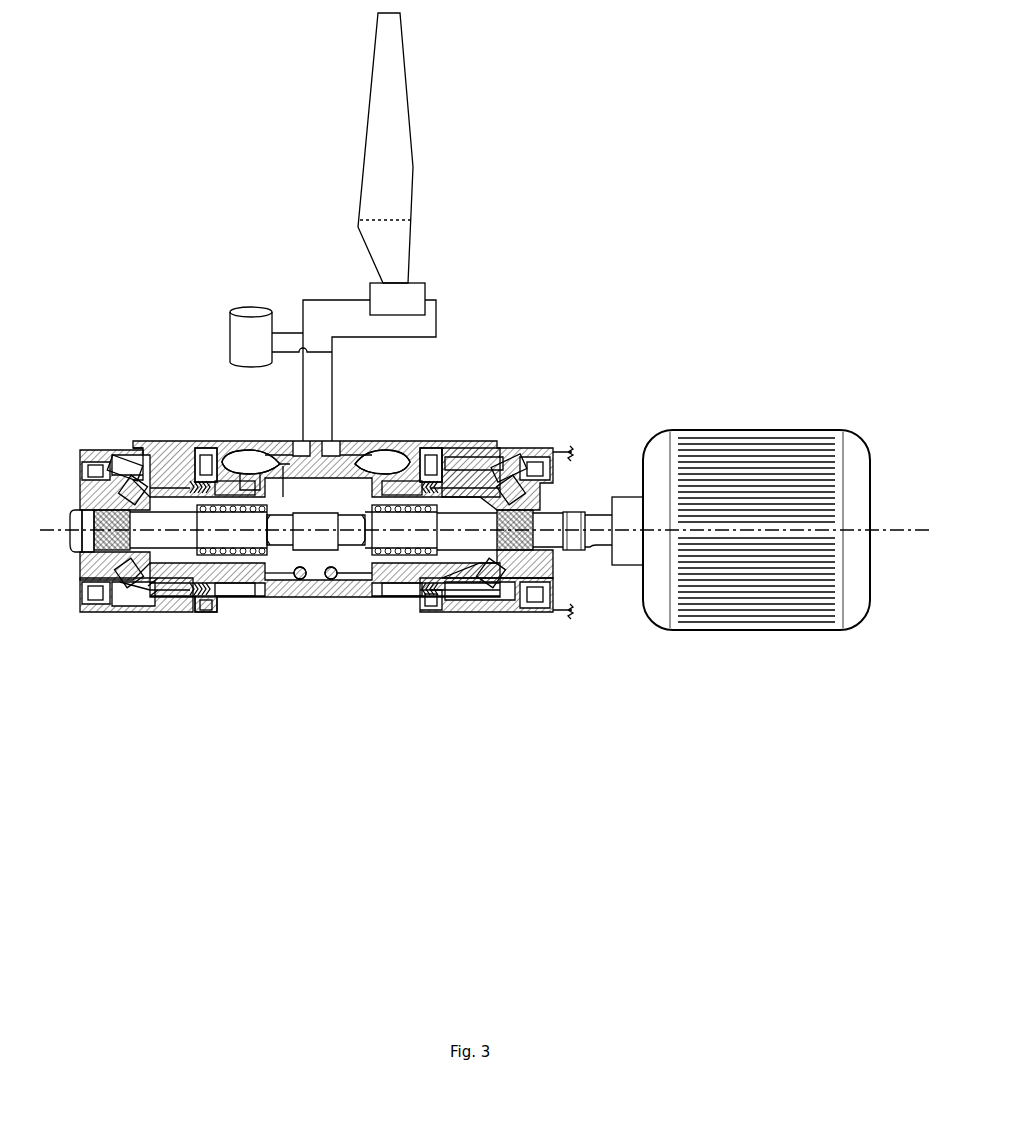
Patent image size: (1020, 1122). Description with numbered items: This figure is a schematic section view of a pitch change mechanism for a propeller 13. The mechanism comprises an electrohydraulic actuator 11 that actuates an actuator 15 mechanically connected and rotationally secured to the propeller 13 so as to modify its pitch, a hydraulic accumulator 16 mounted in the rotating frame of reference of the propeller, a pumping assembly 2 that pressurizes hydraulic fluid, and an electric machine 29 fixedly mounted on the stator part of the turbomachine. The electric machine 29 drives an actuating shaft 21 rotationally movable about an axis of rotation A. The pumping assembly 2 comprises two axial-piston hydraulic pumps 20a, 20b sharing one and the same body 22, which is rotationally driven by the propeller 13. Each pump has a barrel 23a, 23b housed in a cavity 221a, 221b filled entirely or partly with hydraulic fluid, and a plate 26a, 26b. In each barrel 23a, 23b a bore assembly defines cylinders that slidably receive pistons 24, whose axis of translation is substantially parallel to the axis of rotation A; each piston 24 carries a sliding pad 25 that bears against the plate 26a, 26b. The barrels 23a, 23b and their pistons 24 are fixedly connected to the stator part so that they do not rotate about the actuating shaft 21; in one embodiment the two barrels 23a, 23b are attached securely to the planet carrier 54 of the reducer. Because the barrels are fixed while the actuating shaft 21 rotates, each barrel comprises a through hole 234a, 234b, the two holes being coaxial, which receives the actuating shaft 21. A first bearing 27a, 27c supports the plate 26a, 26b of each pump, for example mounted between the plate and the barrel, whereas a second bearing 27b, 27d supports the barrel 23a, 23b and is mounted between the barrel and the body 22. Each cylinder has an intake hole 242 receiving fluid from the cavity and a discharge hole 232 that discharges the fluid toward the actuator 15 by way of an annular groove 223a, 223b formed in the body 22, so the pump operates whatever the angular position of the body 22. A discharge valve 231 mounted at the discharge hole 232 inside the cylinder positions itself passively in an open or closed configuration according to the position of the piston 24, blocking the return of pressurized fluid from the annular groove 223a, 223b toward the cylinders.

The pumping assembly 2 is at (116, 436).
The electrohydraulic actuator 11 is at (471, 326).
The propeller 13 is at (376, 149).
The actuator 15 is at (414, 300).
The hydraulic accumulator 16 is at (270, 339).
The first pump 20a is at (146, 628).
The second pump 20b is at (508, 632).
The actuating shaft 21 is at (598, 507).
The body 22 is at (347, 439).
The cavity 221a is at (226, 460).
The cavity 221b is at (390, 465).
The annular groove 223a is at (287, 582).
The annular groove 223b is at (346, 582).
The barrel 23a is at (250, 600).
The barrel 23b is at (373, 600).
The discharge valve 231 is at (250, 472).
The discharge hole 232 is at (286, 476).
The through hole 234a is at (74, 546).
The through hole 234b is at (563, 551).
The piston 24 is at (238, 604).
The intake hole 242 is at (159, 596).
The sliding pad 25 is at (146, 596).
The plate 26a is at (118, 443).
The plate 26b is at (504, 460).
The first bearing 27a is at (92, 613).
The second bearing 27b is at (203, 440).
The first bearing 27c is at (531, 613).
The second bearing 27d is at (429, 443).
The electric machine 29 is at (792, 428).
The planet carrier 54 is at (578, 453).
The axis of rotation A is at (925, 526).